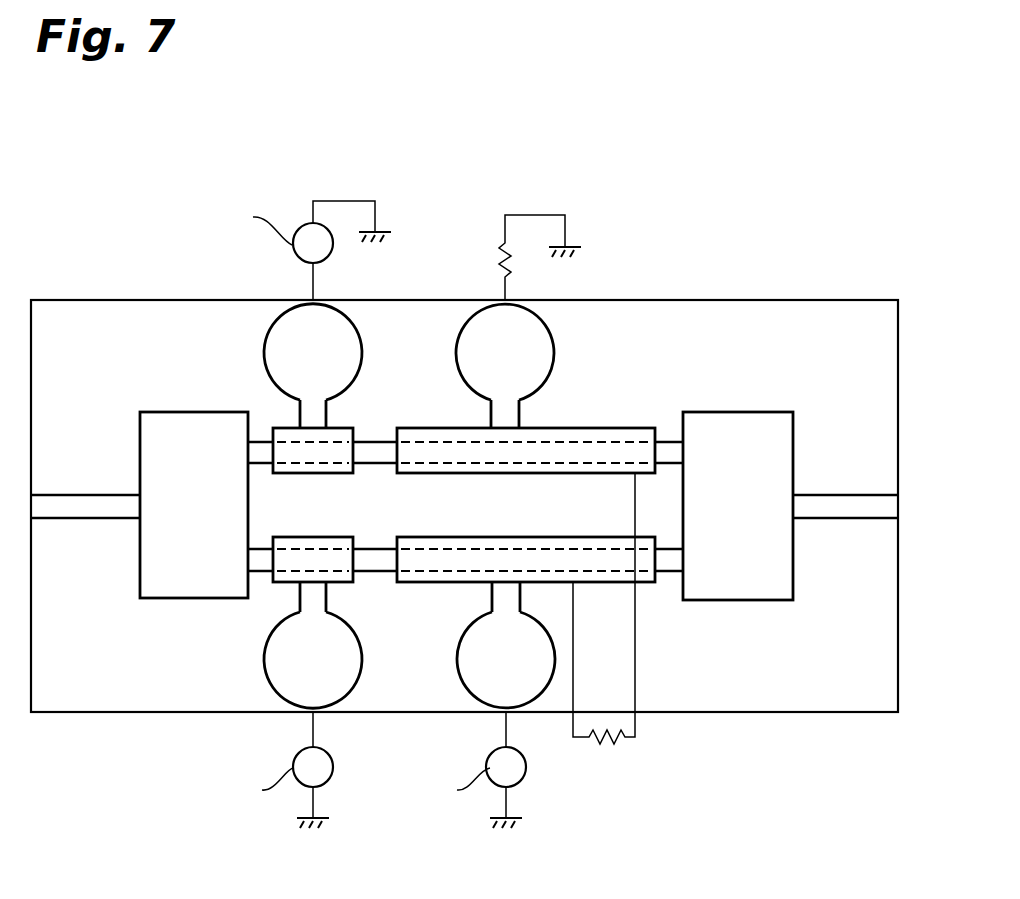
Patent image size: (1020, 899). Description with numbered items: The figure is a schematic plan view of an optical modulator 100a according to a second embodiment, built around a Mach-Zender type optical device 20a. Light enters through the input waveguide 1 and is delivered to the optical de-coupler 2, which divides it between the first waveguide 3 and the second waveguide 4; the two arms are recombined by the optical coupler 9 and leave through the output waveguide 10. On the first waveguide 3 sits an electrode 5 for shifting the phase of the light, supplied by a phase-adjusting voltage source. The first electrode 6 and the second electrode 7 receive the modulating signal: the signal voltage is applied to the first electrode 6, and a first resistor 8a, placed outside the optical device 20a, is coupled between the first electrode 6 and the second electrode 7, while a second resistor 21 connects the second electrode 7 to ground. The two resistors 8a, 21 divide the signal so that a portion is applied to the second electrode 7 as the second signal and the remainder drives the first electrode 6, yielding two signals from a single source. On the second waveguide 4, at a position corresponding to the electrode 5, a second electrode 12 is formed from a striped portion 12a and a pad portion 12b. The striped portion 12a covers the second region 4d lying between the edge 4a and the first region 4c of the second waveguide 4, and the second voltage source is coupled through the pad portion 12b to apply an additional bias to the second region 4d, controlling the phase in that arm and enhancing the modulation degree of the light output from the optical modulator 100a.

The input waveguide 1 is at (68, 494).
The optical de-coupler 2 is at (168, 410).
The first waveguide 3 is at (373, 573).
The second waveguide 4 is at (465, 444).
The edge of the second waveguide 4a is at (256, 472).
The first region of the second waveguide 4c is at (410, 464).
The second region of the second waveguide 4d is at (337, 443).
The electrode 5 is at (278, 695).
The first electrode 6 is at (452, 666).
The second electrode 7 is at (457, 333).
The first resistor 8a is at (607, 760).
The optical coupler 9 is at (767, 602).
The output waveguide 10 is at (858, 520).
The second electrode 12 is at (290, 315).
The striped portion 12a is at (284, 432).
The pad portion 12b is at (285, 366).
The optical device 20a is at (858, 300).
The second resistor 21 is at (471, 234).
The optical modulator 100a is at (704, 176).